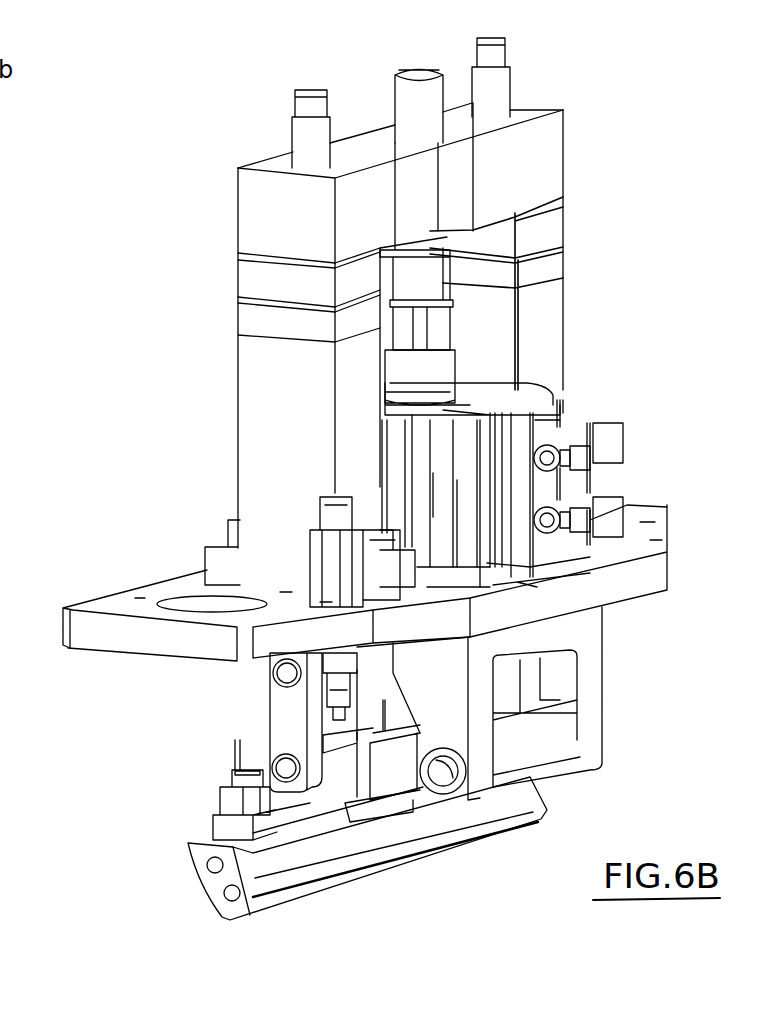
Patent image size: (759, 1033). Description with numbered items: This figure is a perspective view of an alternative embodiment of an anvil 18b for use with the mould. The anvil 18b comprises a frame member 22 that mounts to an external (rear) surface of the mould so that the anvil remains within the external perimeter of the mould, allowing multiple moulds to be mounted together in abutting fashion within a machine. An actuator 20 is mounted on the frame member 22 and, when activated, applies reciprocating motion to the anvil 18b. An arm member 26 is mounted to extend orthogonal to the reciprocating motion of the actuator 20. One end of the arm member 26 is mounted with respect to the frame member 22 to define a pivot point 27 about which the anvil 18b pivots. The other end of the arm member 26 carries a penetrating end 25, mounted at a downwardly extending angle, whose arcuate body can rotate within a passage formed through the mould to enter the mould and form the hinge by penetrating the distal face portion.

The anvil 18b is at (610, 167).
The actuator 20 is at (535, 410).
The frame member 22 is at (273, 458).
The penetrating end 25 is at (225, 910).
The arm member 26 is at (347, 787).
The pivot point 27 is at (447, 787).